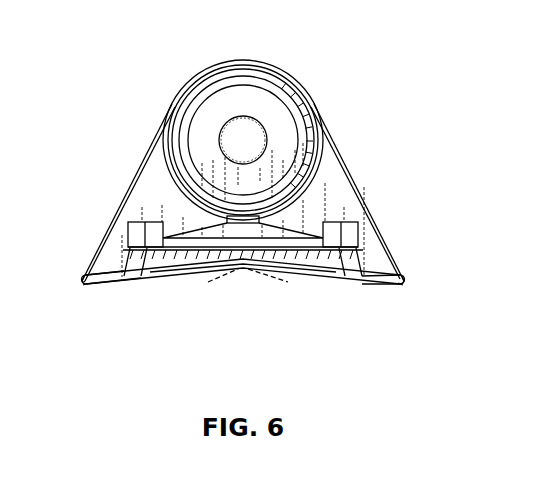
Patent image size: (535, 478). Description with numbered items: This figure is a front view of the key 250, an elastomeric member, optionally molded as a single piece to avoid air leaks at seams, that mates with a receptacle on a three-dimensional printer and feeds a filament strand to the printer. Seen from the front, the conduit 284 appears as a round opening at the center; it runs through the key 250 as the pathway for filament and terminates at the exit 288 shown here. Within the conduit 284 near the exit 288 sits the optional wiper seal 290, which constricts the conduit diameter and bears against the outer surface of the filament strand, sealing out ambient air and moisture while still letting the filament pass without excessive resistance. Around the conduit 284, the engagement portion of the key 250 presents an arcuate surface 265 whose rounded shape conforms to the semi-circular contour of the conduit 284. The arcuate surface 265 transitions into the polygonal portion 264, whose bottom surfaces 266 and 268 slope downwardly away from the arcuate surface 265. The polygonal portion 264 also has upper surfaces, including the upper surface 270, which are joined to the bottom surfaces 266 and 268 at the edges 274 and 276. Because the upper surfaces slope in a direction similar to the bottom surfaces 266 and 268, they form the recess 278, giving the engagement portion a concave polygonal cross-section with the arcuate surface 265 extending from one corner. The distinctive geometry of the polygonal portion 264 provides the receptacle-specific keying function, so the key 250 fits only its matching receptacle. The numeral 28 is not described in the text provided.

The key 250 is at (321, 77).
The arcuate surface 265 is at (230, 61).
The exit 288 is at (291, 135).
The conduit 284 is at (245, 117).
The wiper seal 290 is at (237, 116).
The polygonal portion 264 is at (364, 176).
The bottom surface 266 is at (122, 202).
The bottom surface 268 is at (378, 225).
The edge 274 is at (81, 284).
The edge 276 is at (406, 283).
The upper surface 270 is at (382, 285).
The rail 28 is at (163, 280).
The recess 278 is at (241, 263).